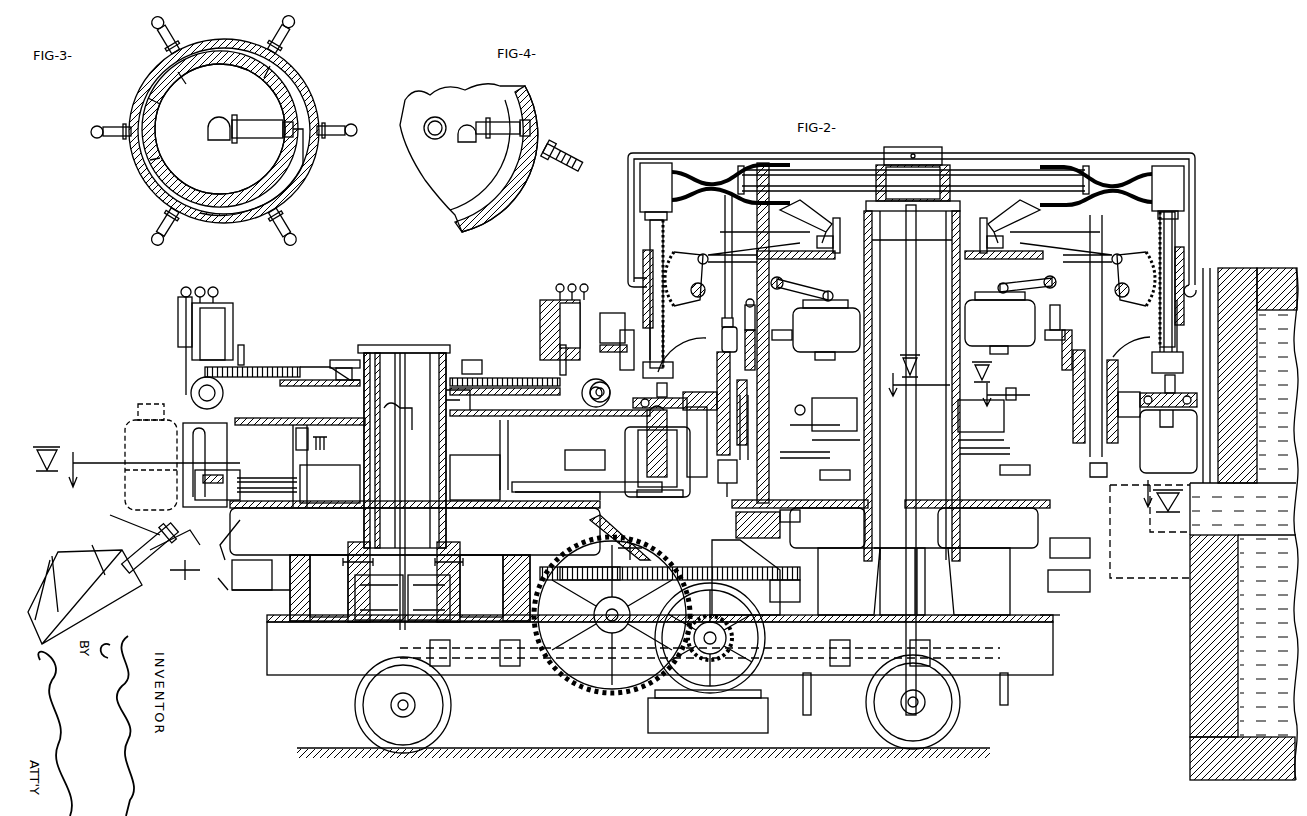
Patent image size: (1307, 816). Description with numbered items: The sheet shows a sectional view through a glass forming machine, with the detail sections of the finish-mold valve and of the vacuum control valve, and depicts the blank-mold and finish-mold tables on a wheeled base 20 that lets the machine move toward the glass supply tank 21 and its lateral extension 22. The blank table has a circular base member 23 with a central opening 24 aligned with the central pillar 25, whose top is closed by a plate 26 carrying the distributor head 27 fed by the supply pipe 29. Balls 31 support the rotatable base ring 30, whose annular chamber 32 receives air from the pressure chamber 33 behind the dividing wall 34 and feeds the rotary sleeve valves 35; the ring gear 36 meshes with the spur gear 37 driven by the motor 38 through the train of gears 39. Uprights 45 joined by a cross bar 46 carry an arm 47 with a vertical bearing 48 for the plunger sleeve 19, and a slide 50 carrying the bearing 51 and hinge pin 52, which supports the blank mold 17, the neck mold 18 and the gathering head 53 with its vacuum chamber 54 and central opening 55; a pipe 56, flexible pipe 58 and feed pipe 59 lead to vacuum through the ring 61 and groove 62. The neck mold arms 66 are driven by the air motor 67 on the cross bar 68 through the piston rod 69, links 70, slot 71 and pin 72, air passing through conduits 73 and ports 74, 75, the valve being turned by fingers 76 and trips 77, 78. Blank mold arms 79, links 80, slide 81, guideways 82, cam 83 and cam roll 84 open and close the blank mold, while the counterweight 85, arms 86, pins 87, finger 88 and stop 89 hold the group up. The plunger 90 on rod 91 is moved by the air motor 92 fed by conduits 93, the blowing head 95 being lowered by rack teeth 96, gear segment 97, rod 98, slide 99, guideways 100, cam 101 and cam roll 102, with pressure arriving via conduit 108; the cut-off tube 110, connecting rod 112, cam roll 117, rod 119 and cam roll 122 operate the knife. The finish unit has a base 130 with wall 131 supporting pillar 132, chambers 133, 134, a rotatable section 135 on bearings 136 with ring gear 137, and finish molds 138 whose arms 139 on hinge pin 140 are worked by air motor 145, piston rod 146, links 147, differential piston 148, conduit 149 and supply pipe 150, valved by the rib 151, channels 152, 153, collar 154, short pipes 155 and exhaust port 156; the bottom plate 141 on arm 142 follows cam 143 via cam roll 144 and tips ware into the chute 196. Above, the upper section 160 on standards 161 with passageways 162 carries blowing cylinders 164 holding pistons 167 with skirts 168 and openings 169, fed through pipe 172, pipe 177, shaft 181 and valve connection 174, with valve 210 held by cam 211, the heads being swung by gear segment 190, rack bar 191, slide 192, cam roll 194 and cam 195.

In FIG. 2, the blank mold 17 is at (945, 453).
In FIG. 2, the neck mold 18 is at (1166, 431).
In FIG. 2, the plunger sleeve 19 is at (1193, 299).
In FIG. 2, the wheeled base 20 is at (520, 672).
In FIG. 2, the molten glass supply tank 21 is at (1197, 661).
In FIG. 2, the lateral extension 22 is at (1168, 574).
In FIG. 2, the circular base member 23 is at (1074, 605).
In FIG. 2, the central axial opening 24 is at (914, 575).
In FIG. 2, the central supporting pillar 25 is at (866, 292).
In FIG. 2, the plate 26 is at (892, 226).
In FIG. 2, the distributor head 27 is at (918, 158).
In FIG. 4, the supply pipe 29 is at (440, 117).
In FIG. 2, the supply pipe 29 is at (906, 318).
In FIG. 2, the base ring 30 is at (971, 556).
In FIG. 2, the anti-friction balls 31 is at (946, 578).
In FIG. 2, the annular chamber 32 is at (891, 524).
In FIG. 2, the air pressure chamber 33 is at (914, 581).
In FIG. 2, the dividing wall 34 is at (895, 581).
In FIG. 2, the rotary sleeve valves 35 is at (903, 520).
In FIG. 2, the ring gear 36 is at (936, 578).
In FIG. 2, the spur gear 37 is at (670, 561).
In FIG. 2, the motor 38 is at (696, 700).
In FIG. 2, the train of gears 39 is at (608, 690).
In FIG. 2, the uprights 45 is at (760, 240).
In FIG. 2, the cross bar 46 is at (778, 190).
In FIG. 2, the horizontally disposed arm 47 is at (910, 279).
In FIG. 2, the vertical bearing 48 is at (643, 257).
In FIG. 2, the slide 50 is at (909, 391).
In FIG. 2, the vertical bearing 51 is at (756, 349).
In FIG. 2, the mold hinge pin 52 is at (955, 372).
In FIG. 2, the gathering head 53 is at (600, 388).
In FIG. 2, the vacuum chamber 54 is at (904, 395).
In FIG. 2, the central opening 55 is at (903, 386).
In FIG. 2, the pipe 56 is at (914, 391).
In FIG. 4, the flexible pipe 58 is at (565, 148).
In FIG. 4, the rigid feed pipe 59 is at (482, 148).
In FIG. 2, the rigid feed pipe 59 is at (925, 574).
In FIG. 4, the ring 61 is at (470, 220).
In FIG. 4, the longitudinal rib (groove) 62 is at (520, 180).
In FIG. 2, the supporting arms 66 is at (1130, 404).
In FIG. 2, the air motor 67 is at (860, 410).
In FIG. 2, the cross bar 68 is at (908, 438).
In FIG. 2, the piston rod 69 is at (1015, 391).
In FIG. 2, the links 70 is at (793, 403).
In FIG. 2, the vertical slot 71 is at (813, 425).
In FIG. 2, the connecting pin 72 is at (1040, 409).
In FIG. 2, the conduits 73 is at (769, 436).
In FIG. 2, the ports 74 is at (919, 534).
In FIG. 2, the ports 75 is at (896, 502).
In FIG. 2, the tangential fingers 76 is at (927, 565).
In FIG. 2, the trip 77 is at (1062, 623).
In FIG. 2, the trip 78 is at (698, 519).
In FIG. 2, the arms 79 is at (1120, 452).
In FIG. 2, the links 80 is at (1078, 452).
In FIG. 2, the slide 81 is at (913, 466).
In FIG. 2, the guideways 82 is at (889, 488).
In FIG. 2, the cam 83 is at (916, 488).
In FIG. 2, the cam roll 84 is at (926, 481).
In FIG. 2, the counterweight 85 is at (965, 336).
In FIG. 2, the parallel arms 86 is at (913, 326).
In FIG. 2, the pins 87 is at (920, 325).
In FIG. 2, the finger 88 is at (944, 326).
In FIG. 2, the adjustable stop 89 is at (933, 313).
In FIG. 2, the plunger 90 is at (919, 374).
In FIG. 2, the plunger rod 91 is at (663, 338).
In FIG. 2, the air motor 92 is at (640, 205).
In FIG. 2, the conduits 93 is at (714, 186).
In FIG. 2, the blowing head 95 is at (905, 354).
In FIG. 2, the rack teeth 96 is at (686, 300).
In FIG. 2, the gear segment 97 is at (698, 254).
In FIG. 2, the rod 98 is at (908, 264).
In FIG. 2, the slide 99 is at (896, 272).
In FIG. 2, the guideways 100 is at (921, 272).
In FIG. 2, the cam 101 is at (910, 241).
In FIG. 2, the cam roll 102 is at (910, 250).
In FIG. 2, the conduit 108 is at (676, 158).
In FIG. 2, the tube or sleeve 110 is at (722, 337).
In FIG. 2, the connecting rod 112 is at (725, 300).
In FIG. 2, the cam roll 117 is at (910, 226).
In FIG. 2, the rod 119 is at (910, 346).
In FIG. 2, the cam roll 122 is at (910, 221).
In FIG. 2, the circular stationary base member 130 is at (262, 618).
In FIG. 2, the upstanding wall 131 is at (406, 587).
In FIG. 2, the central stationary pillar 132 is at (424, 352).
In FIG. 2, the air pressure chamber 133 is at (480, 570).
In FIG. 2, the air pressure chamber 134 is at (550, 532).
In FIG. 2, the rotatable lower section 135 is at (209, 587).
In FIG. 2, the bearings 136 is at (240, 609).
In FIG. 2, the ring gear 137 is at (576, 580).
In FIG. 2, the finish molds 138 is at (227, 452).
In FIG. 2, the supporting arms 139 is at (608, 454).
In FIG. 2, the hinge pin 140 is at (585, 458).
In FIG. 2, the bottom plate 141 is at (140, 538).
In FIG. 2, the arm 142 is at (391, 519).
In FIG. 2, the stationary cam 143 is at (395, 562).
In FIG. 2, the cam roll 144 is at (413, 541).
In FIG. 2, the air motor 145 is at (347, 477).
In FIG. 2, the piston rod 146 is at (449, 483).
In FIG. 2, the links 147 is at (415, 481).
In FIG. 2, the differential piston 148 is at (482, 456).
In FIG. 2, the conduit 149 is at (557, 496).
In FIG. 3, the supply pipe 150 is at (268, 140).
In FIG. 2, the supply pipe 150 is at (414, 523).
In FIG. 3, the annular rib 151 is at (150, 172).
In FIG. 2, the annular rib 151 is at (417, 467).
In FIG. 3, the channel 152 is at (240, 210).
In FIG. 2, the channel 152 is at (420, 437).
In FIG. 3, the circumferentially extending channel 153 is at (296, 74).
In FIG. 3, the flanged collar 154 is at (300, 164).
In FIG. 3, the short pipes 155 is at (346, 126).
In FIG. 2, the short pipes 155 is at (402, 463).
In FIG. 3, the exhaust port 156 is at (186, 72).
In FIG. 2, the upper section 160 is at (442, 430).
In FIG. 2, the standards 161 is at (413, 463).
In FIG. 2, the axial passageways 162 is at (402, 443).
In FIG. 2, the cylinder 164 is at (234, 312).
In FIG. 2, the differential piston 167 is at (562, 325).
In FIG. 2, the annular skirt portion 168 is at (178, 333).
In FIG. 2, the axial opening 169 is at (609, 332).
In FIG. 2, the air pressure supply pipe 172 is at (216, 296).
In FIG. 2, the valve connection 174 is at (435, 395).
In FIG. 2, the pipe 177 is at (246, 354).
In FIG. 2, the shaft 181 is at (191, 388).
In FIG. 2, the gear segment 190 is at (205, 372).
In FIG. 2, the rack bar 191 is at (296, 360).
In FIG. 2, the slide 192 is at (304, 390).
In FIG. 2, the cam roll 194 is at (420, 349).
In FIG. 2, the stationary cam 195 is at (336, 368).
In FIG. 2, the chute 196 is at (132, 585).
In FIG. 2, the valve 210 is at (528, 427).
In FIG. 2, the cam 211 is at (409, 416).